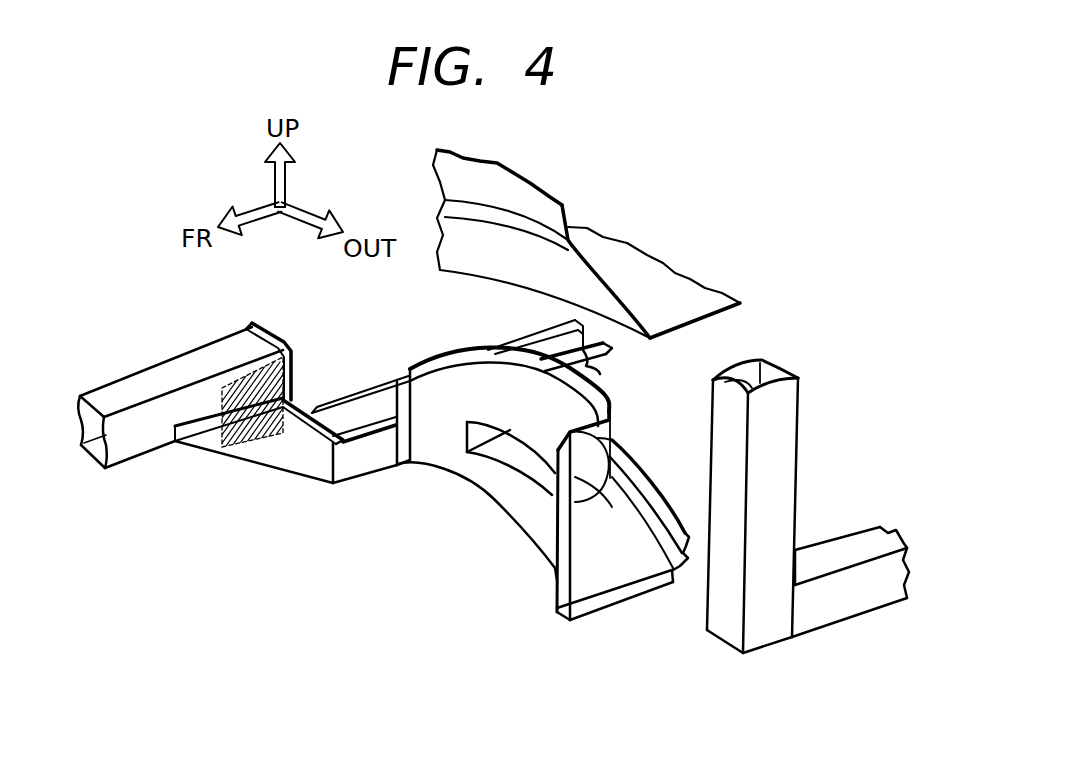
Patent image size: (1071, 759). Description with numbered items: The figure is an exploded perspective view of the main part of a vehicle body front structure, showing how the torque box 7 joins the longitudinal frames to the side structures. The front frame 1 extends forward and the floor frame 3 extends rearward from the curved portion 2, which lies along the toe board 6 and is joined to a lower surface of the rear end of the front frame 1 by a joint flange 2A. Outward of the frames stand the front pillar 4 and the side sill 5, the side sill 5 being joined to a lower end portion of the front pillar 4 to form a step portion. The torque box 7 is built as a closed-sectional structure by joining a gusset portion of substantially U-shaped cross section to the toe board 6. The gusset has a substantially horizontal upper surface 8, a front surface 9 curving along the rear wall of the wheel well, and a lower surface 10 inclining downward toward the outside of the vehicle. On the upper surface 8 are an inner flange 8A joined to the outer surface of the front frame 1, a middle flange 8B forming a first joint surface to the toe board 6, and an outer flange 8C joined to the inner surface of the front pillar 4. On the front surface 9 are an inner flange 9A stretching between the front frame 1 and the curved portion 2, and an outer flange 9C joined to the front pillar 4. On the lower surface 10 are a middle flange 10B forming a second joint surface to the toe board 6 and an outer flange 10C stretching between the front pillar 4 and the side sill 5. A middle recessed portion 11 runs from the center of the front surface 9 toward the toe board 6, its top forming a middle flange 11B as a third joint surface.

The front frame 1 is at (138, 390).
The curved portion 2 is at (293, 453).
The joint flange 2A is at (198, 427).
The floor frame 3 is at (370, 453).
The front pillar 4 is at (777, 462).
The side sill 5 is at (843, 598).
The toe board 6 is at (636, 273).
The torque box 7 is at (478, 490).
The upper surface 8 is at (523, 377).
The inner flange 8A is at (430, 360).
The middle flange 8B is at (541, 360).
The outer flange 8C is at (580, 420).
The front surface 9 is at (447, 435).
The inner flange 9A is at (363, 390).
The outer flange 9C is at (562, 550).
The lower surface 10 is at (593, 565).
The middle flange 10B is at (627, 477).
The outer flange 10C is at (650, 587).
The middle recessed portion 11 is at (585, 490).
The middle flange 11B is at (598, 438).